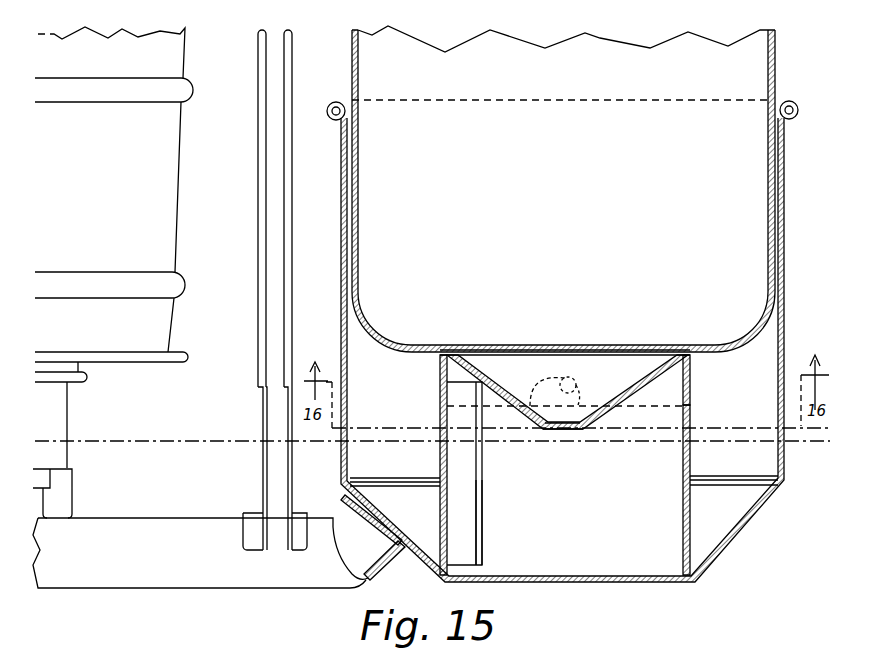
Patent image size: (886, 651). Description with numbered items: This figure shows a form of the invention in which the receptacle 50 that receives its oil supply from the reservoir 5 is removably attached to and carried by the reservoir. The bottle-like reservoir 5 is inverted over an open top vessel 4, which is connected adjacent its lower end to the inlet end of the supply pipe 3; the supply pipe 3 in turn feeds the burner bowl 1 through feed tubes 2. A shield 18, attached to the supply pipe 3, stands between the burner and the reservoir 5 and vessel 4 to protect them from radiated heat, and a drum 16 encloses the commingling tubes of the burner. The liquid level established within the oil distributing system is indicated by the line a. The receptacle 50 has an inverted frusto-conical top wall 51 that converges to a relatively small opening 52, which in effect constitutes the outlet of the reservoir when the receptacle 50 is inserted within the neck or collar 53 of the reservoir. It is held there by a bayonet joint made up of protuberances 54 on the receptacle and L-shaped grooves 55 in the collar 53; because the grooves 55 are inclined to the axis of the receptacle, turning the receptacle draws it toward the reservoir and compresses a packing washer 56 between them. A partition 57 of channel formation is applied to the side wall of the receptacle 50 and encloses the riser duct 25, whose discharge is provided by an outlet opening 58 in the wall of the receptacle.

The drum 16 is at (114, 194).
The shield 18 is at (258, 168).
The burner bowl 1 is at (55, 411).
The feed tubes 2 is at (60, 490).
The supply pipe 3 is at (200, 553).
The liquid level line a is at (238, 446).
The reservoir 5 is at (580, 152).
The open top vessel 4 is at (785, 322).
The packing washer 56 is at (628, 348).
The outlet opening 58 is at (440, 447).
The neck or collar 53 is at (693, 375).
The receptacle 50 is at (690, 418).
The inverted frusto-conical top wall 51 is at (485, 375).
The opening 52 is at (572, 431).
The L-shaped grooves 55 is at (541, 381).
The protuberances 54 is at (580, 382).
The partition 57 is at (482, 470).
The riser duct 25 is at (478, 526).